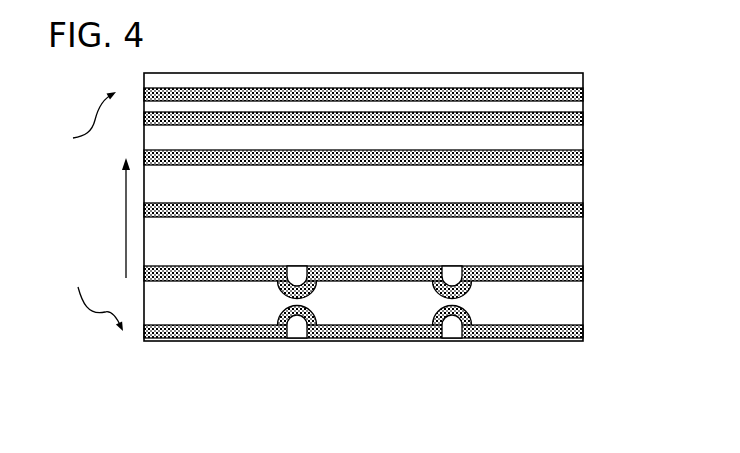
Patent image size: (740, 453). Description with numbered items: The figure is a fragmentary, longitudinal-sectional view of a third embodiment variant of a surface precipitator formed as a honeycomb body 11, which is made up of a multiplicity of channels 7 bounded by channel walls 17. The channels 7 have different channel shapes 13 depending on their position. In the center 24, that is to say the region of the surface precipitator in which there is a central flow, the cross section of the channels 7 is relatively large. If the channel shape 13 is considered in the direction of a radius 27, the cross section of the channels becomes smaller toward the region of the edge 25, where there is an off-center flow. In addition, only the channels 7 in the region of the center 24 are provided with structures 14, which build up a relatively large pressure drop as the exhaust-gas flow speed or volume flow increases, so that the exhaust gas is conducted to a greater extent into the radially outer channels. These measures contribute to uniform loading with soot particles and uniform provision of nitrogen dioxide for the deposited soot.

The multilayer body 11 is at (583, 341).
The conductive layer 13 is at (510, 104).
The insulating layer 7 is at (568, 137).
The intermediate conductive layer 17 is at (583, 208).
The via conductor 14 is at (297, 327).
The upper side direction 25 is at (69, 131).
The stacking direction 27 is at (126, 228).
The lower side direction 24 is at (71, 292).